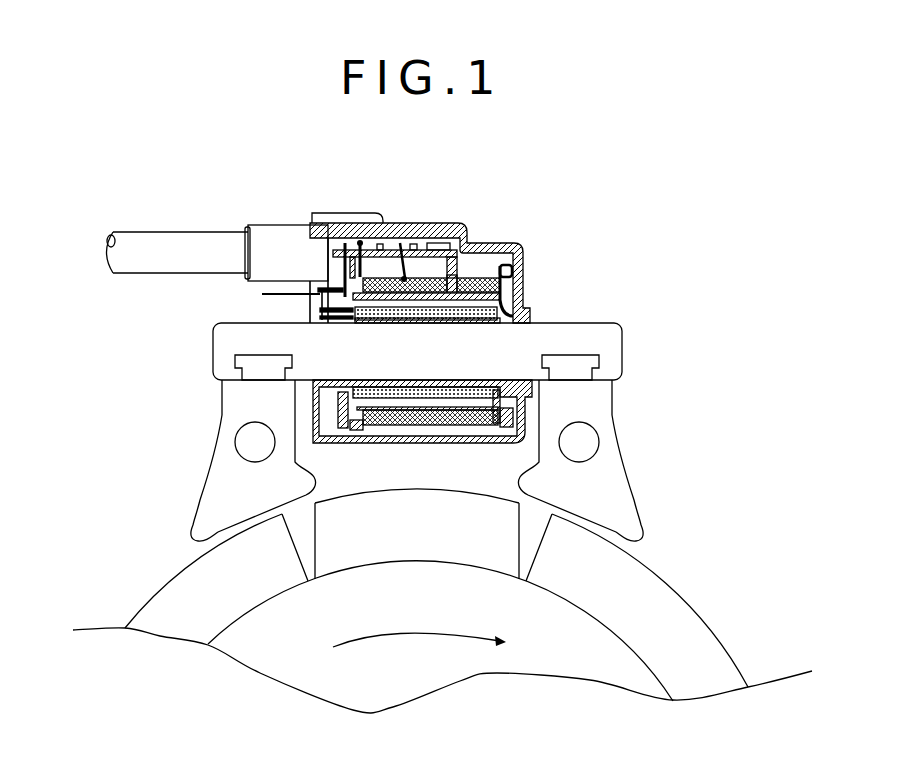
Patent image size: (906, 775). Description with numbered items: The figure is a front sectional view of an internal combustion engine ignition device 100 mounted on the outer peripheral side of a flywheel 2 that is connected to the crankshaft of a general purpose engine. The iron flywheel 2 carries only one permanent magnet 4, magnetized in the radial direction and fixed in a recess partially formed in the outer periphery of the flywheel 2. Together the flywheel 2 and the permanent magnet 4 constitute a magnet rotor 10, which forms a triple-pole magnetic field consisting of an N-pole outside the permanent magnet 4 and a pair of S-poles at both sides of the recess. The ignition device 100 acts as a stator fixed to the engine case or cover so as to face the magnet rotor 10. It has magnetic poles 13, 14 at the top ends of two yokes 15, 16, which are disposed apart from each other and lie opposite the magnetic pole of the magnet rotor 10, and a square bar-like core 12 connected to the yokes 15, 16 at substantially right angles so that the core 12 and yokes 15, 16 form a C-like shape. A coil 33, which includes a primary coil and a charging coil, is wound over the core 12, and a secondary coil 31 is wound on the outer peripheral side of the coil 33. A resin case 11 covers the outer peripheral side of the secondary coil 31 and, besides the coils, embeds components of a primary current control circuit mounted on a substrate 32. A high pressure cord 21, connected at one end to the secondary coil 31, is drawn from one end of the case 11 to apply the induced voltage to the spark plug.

The internal combustion engine ignition device 100 is at (580, 195).
The flywheel 2 is at (707, 648).
The permanent magnet 4 is at (488, 507).
The magnet rotor 10 is at (699, 604).
The case 11 is at (521, 253).
The core 12 is at (222, 343).
The magnetic pole 13 is at (200, 550).
The magnetic pole 14 is at (627, 538).
The yoke 15 is at (222, 465).
The yoke 16 is at (611, 465).
The high pressure cord 21 is at (167, 242).
The secondary coil 31 is at (410, 300).
The substrate 32 is at (430, 278).
The coil 33 is at (395, 285).